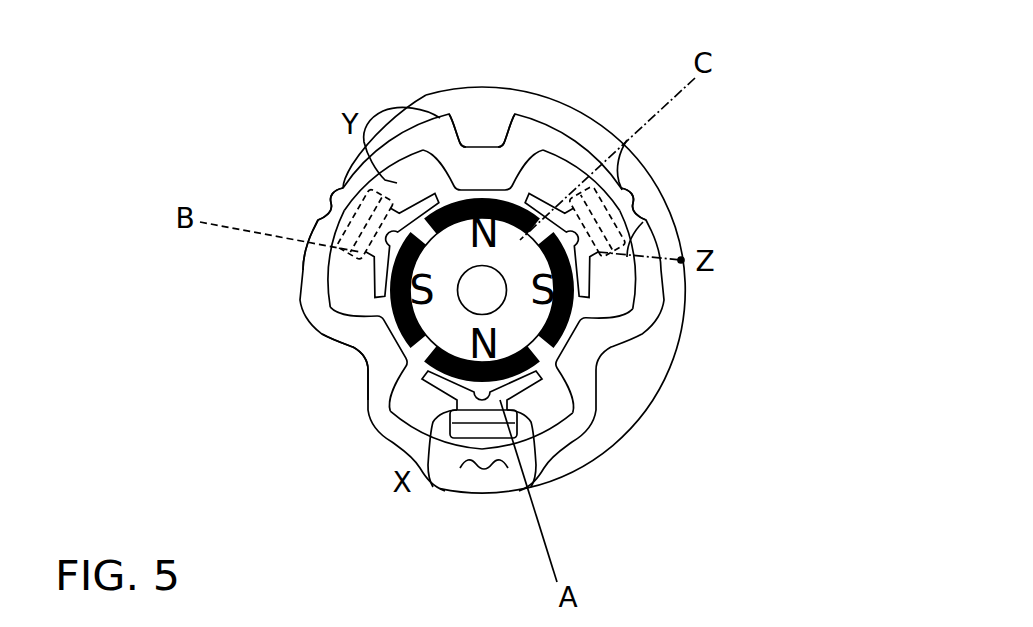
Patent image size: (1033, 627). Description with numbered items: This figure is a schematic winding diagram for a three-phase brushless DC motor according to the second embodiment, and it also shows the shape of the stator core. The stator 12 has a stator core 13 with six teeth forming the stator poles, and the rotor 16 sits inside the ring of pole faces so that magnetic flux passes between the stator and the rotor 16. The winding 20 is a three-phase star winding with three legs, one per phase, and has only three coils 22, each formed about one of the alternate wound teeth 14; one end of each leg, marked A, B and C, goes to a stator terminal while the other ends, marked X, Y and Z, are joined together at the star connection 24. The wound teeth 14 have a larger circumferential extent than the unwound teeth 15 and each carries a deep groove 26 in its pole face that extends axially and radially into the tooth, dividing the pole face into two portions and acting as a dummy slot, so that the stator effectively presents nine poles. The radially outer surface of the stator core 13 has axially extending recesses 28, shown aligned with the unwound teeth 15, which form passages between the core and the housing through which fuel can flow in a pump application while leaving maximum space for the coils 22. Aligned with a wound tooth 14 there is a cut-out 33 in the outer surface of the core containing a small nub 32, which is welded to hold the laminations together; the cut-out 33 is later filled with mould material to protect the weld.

The stator 12 is at (361, 432).
The stator core 13 is at (320, 275).
The wound teeth 14 is at (412, 210).
The unwound teeth 15 is at (472, 172).
The rotor 16 is at (443, 330).
The winding 20 is at (652, 406).
The coils 22 is at (630, 198).
The star connection 24 is at (684, 263).
The groove 26 is at (570, 185).
The recesses 28 is at (493, 124).
The nub 32 is at (331, 199).
The cut-out 33 is at (322, 207).